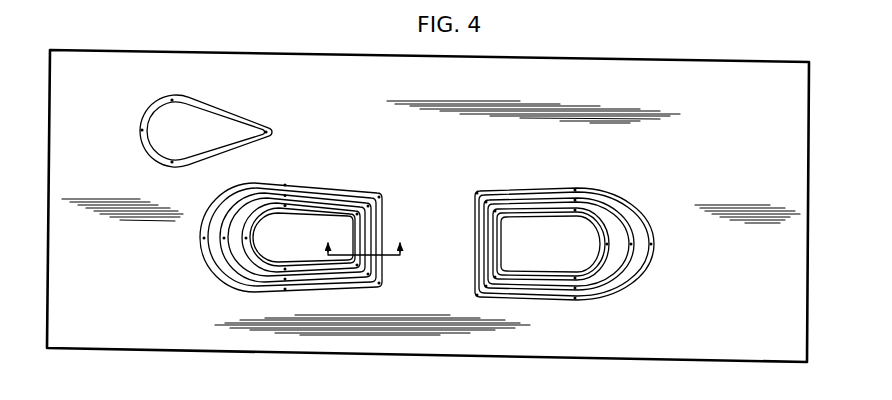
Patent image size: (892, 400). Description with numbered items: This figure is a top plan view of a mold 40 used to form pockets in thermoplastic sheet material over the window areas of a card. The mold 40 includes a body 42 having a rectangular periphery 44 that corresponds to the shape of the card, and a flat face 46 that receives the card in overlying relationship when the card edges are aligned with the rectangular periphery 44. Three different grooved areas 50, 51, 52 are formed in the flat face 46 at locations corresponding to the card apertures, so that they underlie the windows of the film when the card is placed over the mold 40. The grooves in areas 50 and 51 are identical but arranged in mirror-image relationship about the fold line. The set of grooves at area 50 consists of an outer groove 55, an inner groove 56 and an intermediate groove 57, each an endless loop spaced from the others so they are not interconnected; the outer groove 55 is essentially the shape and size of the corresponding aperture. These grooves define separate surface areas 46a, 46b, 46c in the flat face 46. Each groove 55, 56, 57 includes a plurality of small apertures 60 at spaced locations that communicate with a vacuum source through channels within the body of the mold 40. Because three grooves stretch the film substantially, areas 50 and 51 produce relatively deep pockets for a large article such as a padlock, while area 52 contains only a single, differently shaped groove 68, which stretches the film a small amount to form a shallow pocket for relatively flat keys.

The mold 40 is at (237, 46).
The body 42 is at (603, 74).
The rectangular periphery 44 is at (678, 62).
The flat face 46 is at (135, 62).
The surface area 46a is at (267, 224).
The surface area 46b is at (269, 224).
The surface area 46c is at (283, 257).
The grooved area 50 is at (280, 236).
The grooved area 51 is at (620, 187).
The grooved area 52 is at (206, 131).
The outer groove 55 is at (265, 186).
The inner groove 56 is at (306, 211).
The intermediate groove 57 is at (315, 197).
The apertures 60 is at (347, 268).
The single groove 68 is at (147, 150).